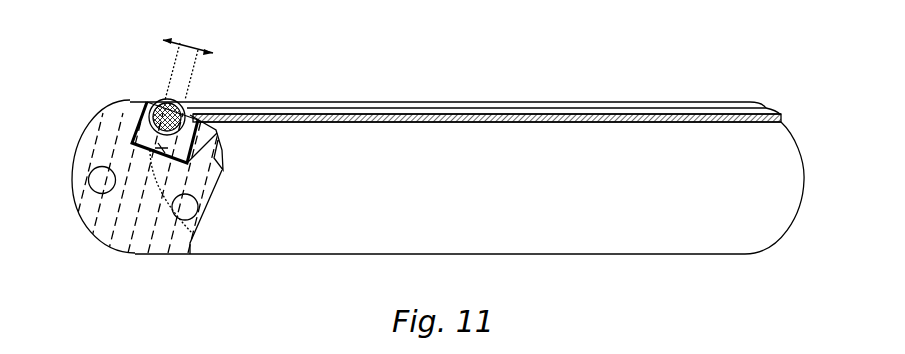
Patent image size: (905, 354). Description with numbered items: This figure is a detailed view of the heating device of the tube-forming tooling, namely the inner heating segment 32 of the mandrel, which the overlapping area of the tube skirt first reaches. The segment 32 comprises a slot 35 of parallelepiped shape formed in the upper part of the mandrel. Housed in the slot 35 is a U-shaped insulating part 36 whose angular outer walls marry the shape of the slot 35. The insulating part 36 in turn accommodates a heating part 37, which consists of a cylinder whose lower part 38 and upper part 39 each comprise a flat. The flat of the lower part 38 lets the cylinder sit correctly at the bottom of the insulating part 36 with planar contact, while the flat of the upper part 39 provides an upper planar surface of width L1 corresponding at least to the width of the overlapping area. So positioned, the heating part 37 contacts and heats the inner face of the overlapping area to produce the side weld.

The inner heating segment 32 is at (582, 230).
The slot 35 is at (123, 149).
The insulating part 36 is at (133, 137).
The heating part 37 is at (152, 100).
The lower part 38 is at (192, 233).
The upper part 39 is at (187, 100).
The width L1 is at (188, 61).